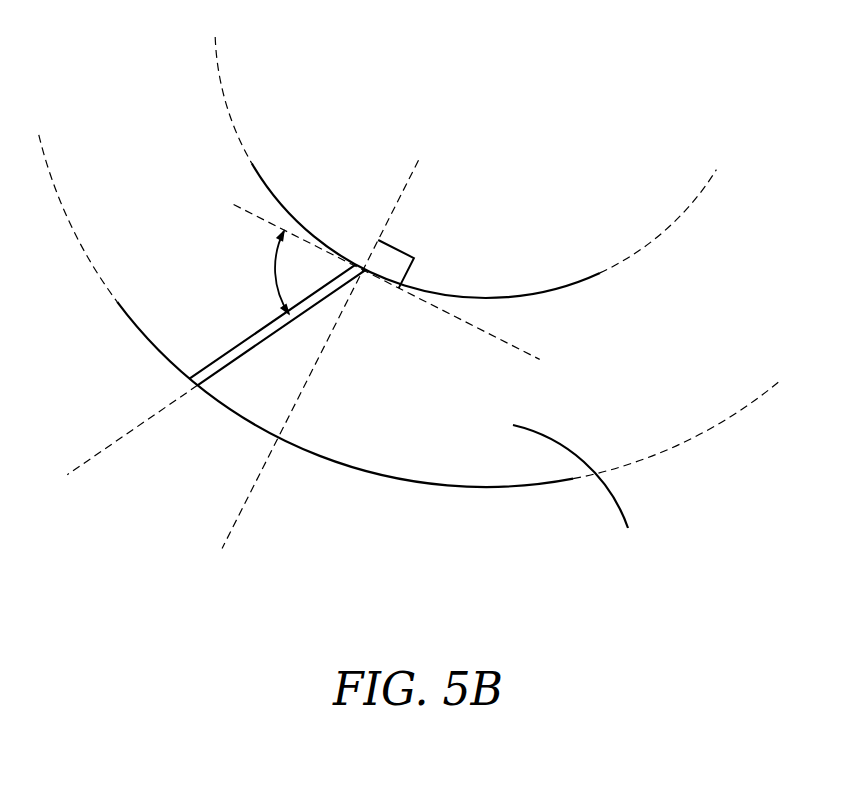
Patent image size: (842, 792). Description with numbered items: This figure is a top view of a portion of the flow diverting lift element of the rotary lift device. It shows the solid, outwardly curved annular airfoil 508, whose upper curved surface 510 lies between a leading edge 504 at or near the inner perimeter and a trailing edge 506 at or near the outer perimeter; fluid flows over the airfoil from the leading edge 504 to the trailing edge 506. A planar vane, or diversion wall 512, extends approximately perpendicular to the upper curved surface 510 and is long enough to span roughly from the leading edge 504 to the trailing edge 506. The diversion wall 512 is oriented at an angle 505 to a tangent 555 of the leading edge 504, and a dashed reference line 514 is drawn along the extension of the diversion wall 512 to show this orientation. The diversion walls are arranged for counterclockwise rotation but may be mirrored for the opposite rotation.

The leading edge 504 is at (548, 290).
The angle 505 is at (273, 275).
The trailing edge 506 is at (500, 491).
The annular airfoil 508 is at (579, 492).
The upper curved surface 510 is at (132, 172).
The diversion wall 512 is at (245, 350).
The fin axis 514 is at (128, 433).
The tangent 555 is at (517, 343).